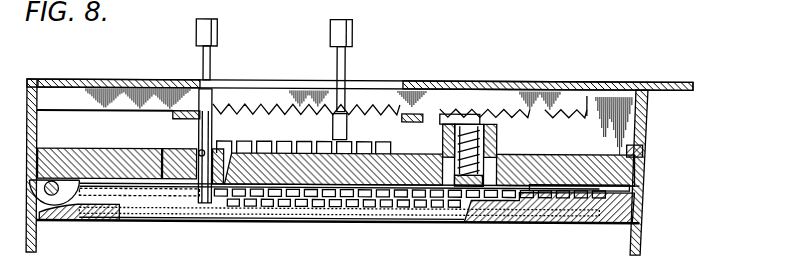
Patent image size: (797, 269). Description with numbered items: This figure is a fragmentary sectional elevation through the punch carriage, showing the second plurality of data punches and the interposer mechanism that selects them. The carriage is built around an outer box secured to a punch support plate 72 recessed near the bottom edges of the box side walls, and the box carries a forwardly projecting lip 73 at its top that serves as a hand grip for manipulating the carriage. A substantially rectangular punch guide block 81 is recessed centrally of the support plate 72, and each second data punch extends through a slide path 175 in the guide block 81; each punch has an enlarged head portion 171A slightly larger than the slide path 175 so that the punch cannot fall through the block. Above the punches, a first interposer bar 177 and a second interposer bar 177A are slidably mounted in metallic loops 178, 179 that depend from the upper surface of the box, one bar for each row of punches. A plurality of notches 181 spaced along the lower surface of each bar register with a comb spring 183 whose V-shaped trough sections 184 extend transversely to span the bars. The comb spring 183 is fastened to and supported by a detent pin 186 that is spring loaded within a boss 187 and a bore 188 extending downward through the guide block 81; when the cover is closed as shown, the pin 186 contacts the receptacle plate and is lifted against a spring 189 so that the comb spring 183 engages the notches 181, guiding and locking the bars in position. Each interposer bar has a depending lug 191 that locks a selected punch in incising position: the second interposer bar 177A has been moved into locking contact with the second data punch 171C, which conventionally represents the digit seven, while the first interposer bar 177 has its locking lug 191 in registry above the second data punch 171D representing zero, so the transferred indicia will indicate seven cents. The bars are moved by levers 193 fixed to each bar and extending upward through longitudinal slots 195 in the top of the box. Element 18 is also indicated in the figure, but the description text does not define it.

The forwardly projecting lip 73 is at (683, 84).
The levers 193 is at (217, 26).
The interposer bar 177 is at (262, 90).
The metallic loop 179 is at (172, 113).
The depending lug 191 is at (207, 118).
The longitudinal slots 195 is at (288, 88).
The notches 181 is at (370, 110).
The V-shaped trough sections 184 is at (433, 112).
The comb spring 183 is at (463, 115).
The spring 189 is at (487, 128).
The boss 187 is at (486, 141).
The bore 188 is at (482, 167).
The detent pin 186 is at (493, 115).
The punch support plate 72 is at (105, 149).
The slide path 175 is at (197, 148).
The second data punch 171D is at (190, 133).
The enlarged head portion 171A is at (264, 140).
The second interposer bar 177A is at (335, 124).
The second data punch 171C is at (346, 140).
The punch guide block 81 is at (404, 170).
The metallic loop 178 is at (412, 120).
The circuit board 18 is at (427, 203).